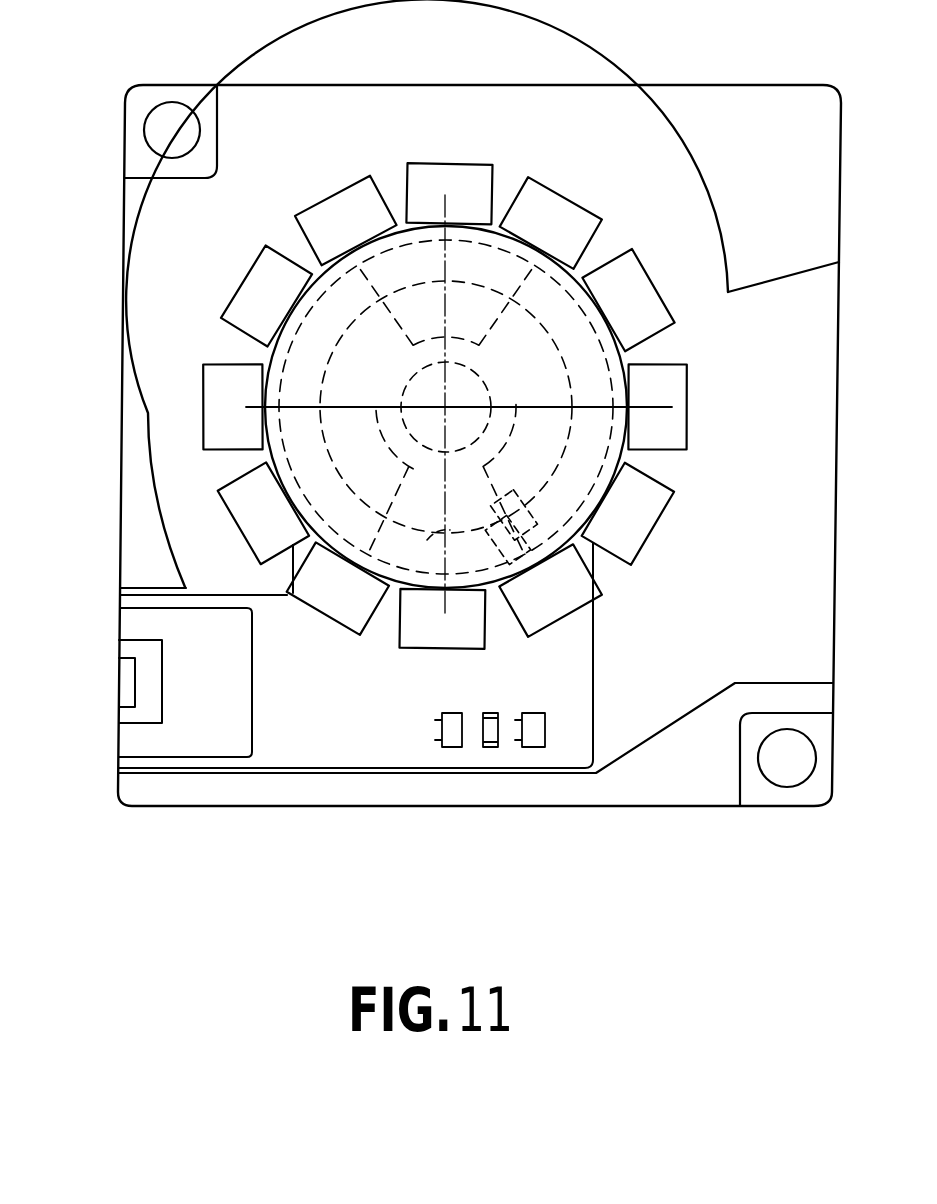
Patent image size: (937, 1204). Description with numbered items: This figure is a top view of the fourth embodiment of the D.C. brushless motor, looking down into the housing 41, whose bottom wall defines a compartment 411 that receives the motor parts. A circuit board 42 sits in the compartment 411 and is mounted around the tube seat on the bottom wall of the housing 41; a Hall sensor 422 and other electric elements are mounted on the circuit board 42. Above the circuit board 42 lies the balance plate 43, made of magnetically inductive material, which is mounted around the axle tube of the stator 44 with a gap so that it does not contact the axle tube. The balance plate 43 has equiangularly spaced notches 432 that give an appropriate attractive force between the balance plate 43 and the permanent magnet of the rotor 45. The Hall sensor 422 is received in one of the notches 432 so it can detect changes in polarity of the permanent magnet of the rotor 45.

The housing 41 is at (122, 276).
The compartment 411 is at (635, 730).
The circuit board 42 is at (505, 757).
The Hall sensor 422 is at (432, 545).
The balance plate 43 is at (600, 313).
The notches 432 is at (430, 318).
The stator 44 is at (420, 285).
The rotor 45 is at (523, 246).